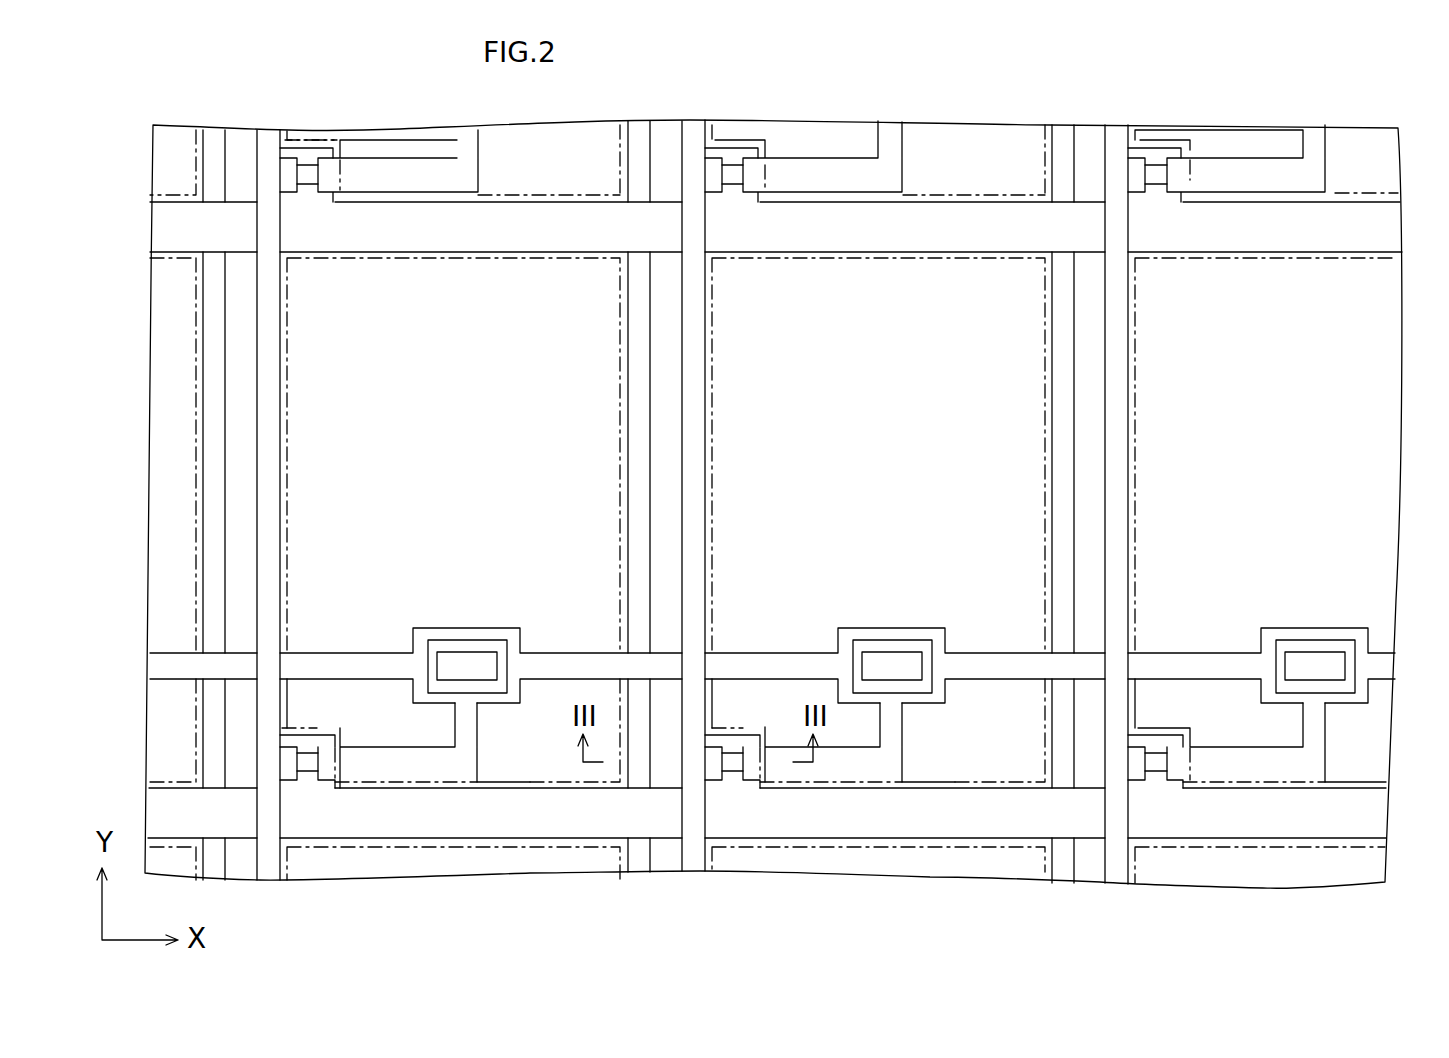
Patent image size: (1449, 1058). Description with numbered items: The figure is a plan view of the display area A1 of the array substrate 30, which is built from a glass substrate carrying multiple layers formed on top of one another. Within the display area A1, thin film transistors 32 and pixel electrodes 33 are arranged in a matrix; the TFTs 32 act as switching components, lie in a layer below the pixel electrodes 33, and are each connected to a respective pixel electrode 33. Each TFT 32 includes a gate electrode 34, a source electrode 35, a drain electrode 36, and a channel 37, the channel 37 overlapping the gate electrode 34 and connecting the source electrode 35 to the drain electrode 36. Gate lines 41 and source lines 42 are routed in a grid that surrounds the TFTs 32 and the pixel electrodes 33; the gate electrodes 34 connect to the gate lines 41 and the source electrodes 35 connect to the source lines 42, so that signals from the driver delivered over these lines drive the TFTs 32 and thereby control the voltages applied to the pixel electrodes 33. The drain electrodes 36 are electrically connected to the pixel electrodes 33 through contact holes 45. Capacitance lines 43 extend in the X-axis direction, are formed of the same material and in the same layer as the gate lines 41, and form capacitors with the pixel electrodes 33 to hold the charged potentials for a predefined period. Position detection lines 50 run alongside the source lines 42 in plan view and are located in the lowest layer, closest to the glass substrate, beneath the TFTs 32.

The array substrate 30 is at (180, 107).
The thin film transistor 32 is at (833, 493).
The pixel electrode 33 is at (1017, 153).
The gate electrode 34 is at (750, 738).
The source electrode 35 is at (713, 773).
The drain electrode 36 is at (755, 768).
The channel 37 is at (729, 772).
The gate line 41 is at (920, 225).
The source line 42 is at (270, 858).
The capacitance line 43 is at (1175, 665).
The contact hole 45 is at (912, 665).
The position detection line 50 is at (213, 542).
The display area A1 is at (1366, 143).